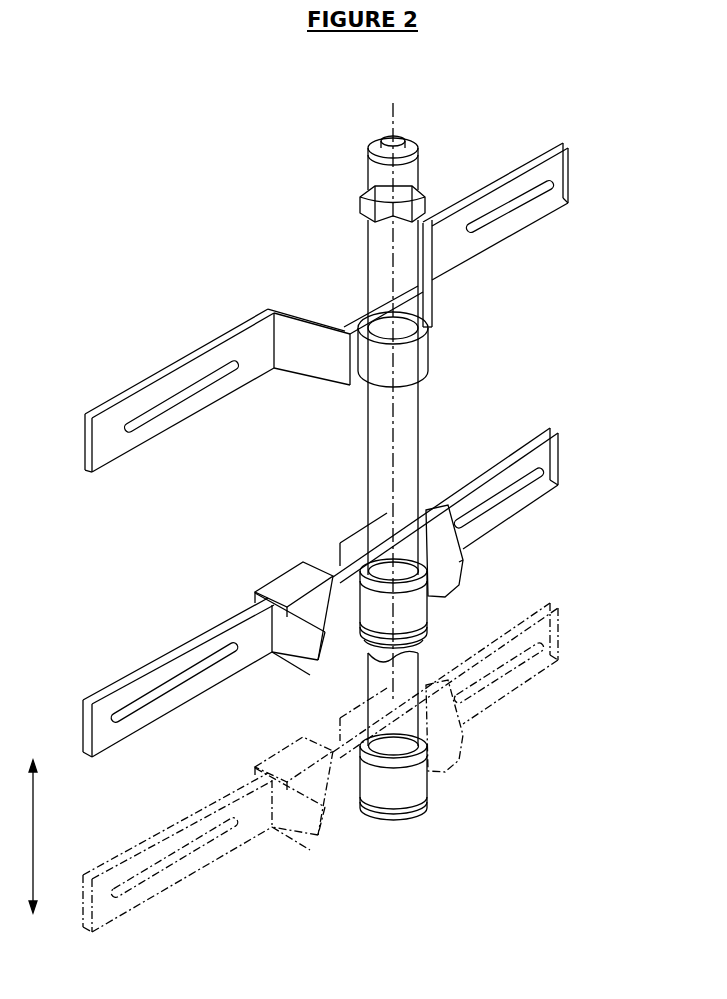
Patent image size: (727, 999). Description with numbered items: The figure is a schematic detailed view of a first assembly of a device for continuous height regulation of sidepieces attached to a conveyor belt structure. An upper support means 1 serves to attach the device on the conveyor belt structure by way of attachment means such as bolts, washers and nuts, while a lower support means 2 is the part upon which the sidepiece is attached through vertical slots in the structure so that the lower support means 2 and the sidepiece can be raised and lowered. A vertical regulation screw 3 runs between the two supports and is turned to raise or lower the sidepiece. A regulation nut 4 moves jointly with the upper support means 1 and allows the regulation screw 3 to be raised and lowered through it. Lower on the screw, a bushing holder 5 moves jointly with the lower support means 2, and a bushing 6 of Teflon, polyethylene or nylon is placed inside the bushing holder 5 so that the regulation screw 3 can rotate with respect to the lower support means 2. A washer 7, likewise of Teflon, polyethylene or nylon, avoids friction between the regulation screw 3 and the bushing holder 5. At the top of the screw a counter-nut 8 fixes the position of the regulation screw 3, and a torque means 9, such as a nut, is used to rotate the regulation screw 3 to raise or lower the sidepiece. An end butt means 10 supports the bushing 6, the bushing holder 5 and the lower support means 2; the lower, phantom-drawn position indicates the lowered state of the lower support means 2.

The upper support means 1 is at (369, 292).
The lower support means 2 is at (351, 666).
The regulation screw 3 is at (350, 397).
The regulation nut 4 is at (355, 371).
The bushing holder 5 is at (344, 667).
The bushing 6 is at (440, 568).
The washer 7 is at (423, 632).
The counter-nut 8 is at (348, 181).
The torque means 9 is at (408, 138).
The end butt means 10 is at (344, 675).